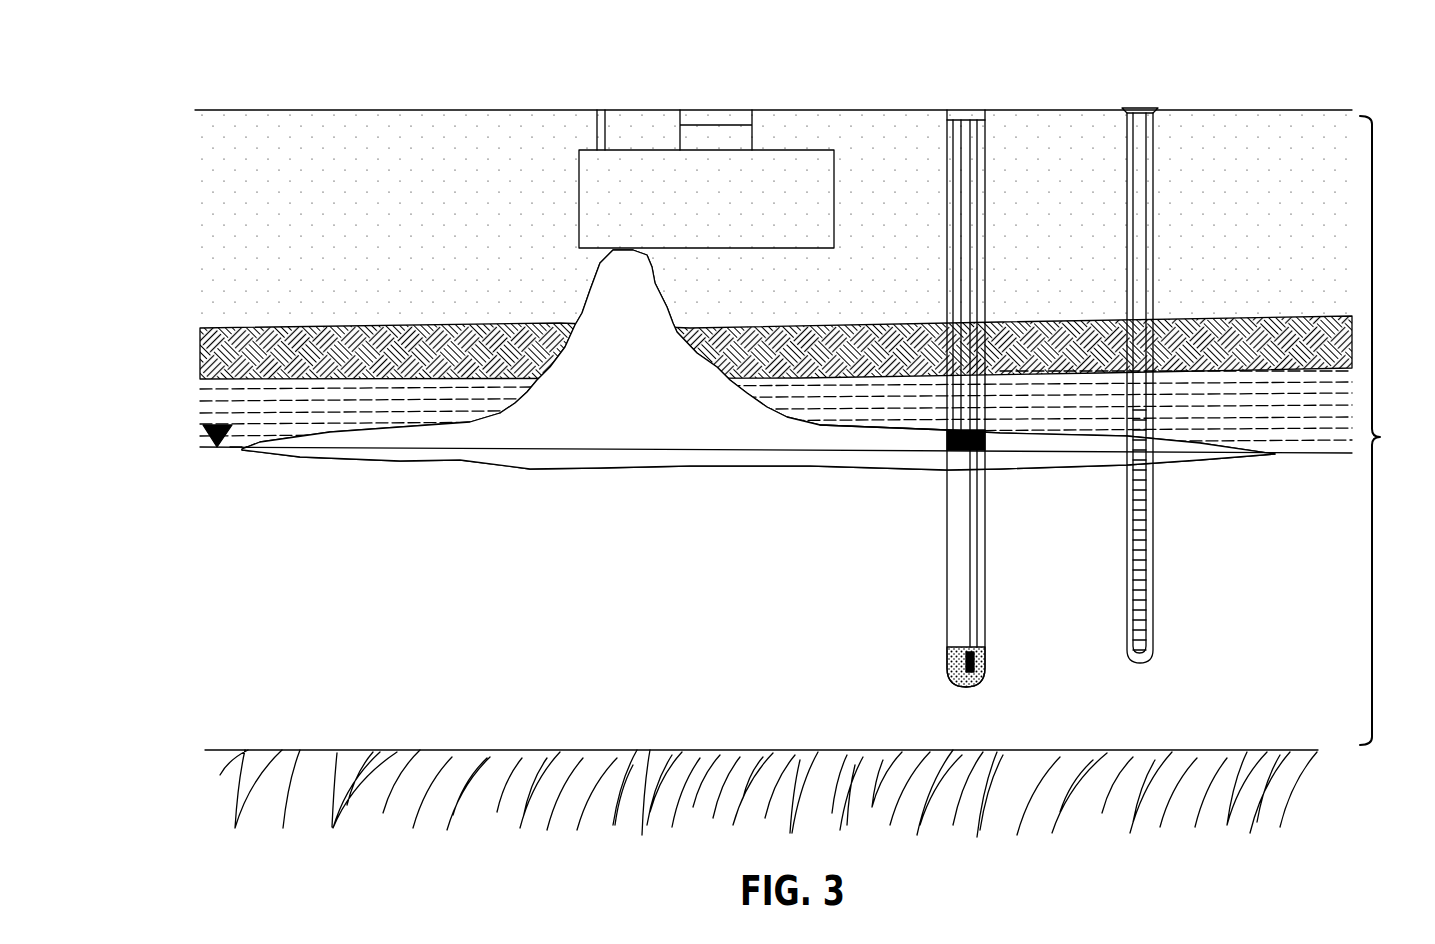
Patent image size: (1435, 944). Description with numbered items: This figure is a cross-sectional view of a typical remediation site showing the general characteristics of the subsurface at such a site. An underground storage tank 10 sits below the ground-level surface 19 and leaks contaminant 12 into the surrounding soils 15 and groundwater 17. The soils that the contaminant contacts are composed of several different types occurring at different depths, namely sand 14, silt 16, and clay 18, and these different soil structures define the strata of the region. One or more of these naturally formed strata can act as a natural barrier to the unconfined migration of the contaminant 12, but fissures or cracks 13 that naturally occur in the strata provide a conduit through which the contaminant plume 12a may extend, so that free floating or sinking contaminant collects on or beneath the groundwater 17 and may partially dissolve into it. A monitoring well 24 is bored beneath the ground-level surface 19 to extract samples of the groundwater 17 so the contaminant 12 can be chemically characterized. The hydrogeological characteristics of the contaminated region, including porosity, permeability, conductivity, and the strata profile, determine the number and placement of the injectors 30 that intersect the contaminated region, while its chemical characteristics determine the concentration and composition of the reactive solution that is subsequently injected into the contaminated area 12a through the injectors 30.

The underground storage tank 10 is at (729, 172).
The contaminant 12 is at (630, 254).
The contaminant plume 12a is at (690, 466).
The fissures or cracks 13 is at (216, 797).
The sand 14 is at (287, 146).
The soils 15 is at (1382, 430).
The silt 16 is at (212, 411).
The groundwater 17 is at (212, 512).
The clay 18 is at (202, 346).
The ground-level surface 19 is at (773, 99).
The monitoring well 24 is at (1139, 108).
The injectors 30 is at (967, 133).